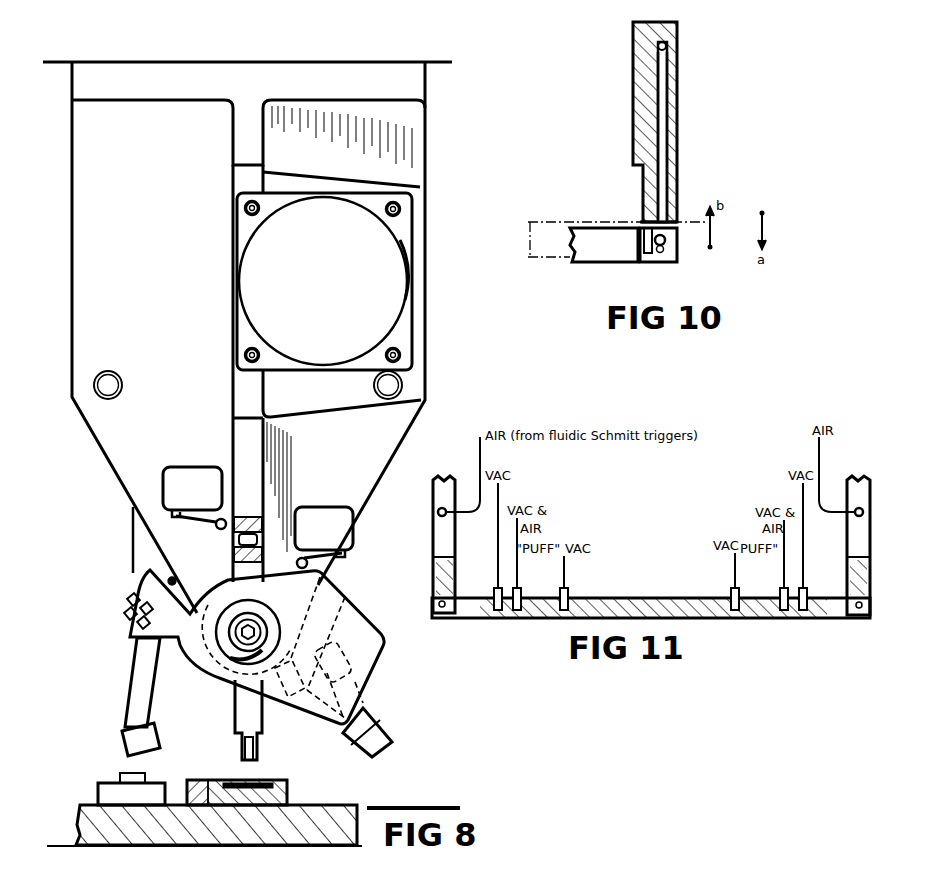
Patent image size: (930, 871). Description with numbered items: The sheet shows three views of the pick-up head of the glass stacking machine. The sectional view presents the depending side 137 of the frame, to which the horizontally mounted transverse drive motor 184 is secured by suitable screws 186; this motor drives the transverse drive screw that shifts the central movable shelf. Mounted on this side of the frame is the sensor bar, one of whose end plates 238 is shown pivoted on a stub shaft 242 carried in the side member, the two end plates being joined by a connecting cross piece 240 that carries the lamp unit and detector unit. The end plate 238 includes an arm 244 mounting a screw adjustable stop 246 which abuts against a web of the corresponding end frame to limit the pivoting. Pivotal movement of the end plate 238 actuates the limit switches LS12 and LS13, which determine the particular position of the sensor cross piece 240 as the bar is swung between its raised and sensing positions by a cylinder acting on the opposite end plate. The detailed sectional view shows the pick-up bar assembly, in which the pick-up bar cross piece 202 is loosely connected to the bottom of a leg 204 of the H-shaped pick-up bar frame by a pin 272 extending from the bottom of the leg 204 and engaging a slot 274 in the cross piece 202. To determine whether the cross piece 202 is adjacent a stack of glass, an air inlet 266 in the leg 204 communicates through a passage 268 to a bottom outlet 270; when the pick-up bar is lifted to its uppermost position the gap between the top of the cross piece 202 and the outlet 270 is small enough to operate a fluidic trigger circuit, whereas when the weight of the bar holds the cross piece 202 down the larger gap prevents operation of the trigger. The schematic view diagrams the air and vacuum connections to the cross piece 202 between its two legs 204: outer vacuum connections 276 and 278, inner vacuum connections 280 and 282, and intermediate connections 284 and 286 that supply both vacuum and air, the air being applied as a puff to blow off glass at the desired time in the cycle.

In FIG. 8, the side of frame 137 is at (192, 427).
In FIG. 8, the transverse drive motor 184 is at (301, 299).
In FIG. 8, the screws 186 is at (259, 349).
In FIG. 8, the limit switch LS12 is at (194, 498).
In FIG. 8, the limit switch LS13 is at (324, 537).
In FIG. 8, the end plate 238 is at (331, 593).
In FIG. 8, the cross piece 240 is at (340, 662).
In FIG. 8, the stub shafts 242 is at (262, 620).
In FIG. 8, the arm 244 is at (146, 580).
In FIG. 8, the screw adjustable stop 246 is at (178, 580).
In FIG. 10, the pick-up bar cross piece 202 is at (607, 263).
In FIG. 11, the pick-up bar cross piece 202 is at (652, 598).
In FIG. 10, the legs 204 is at (678, 153).
In FIG. 11, the legs 204 is at (433, 572).
In FIG. 10, the air inlet 266 is at (666, 44).
In FIG. 11, the air inlet 266 is at (438, 513).
In FIG. 10, the passage 268 is at (663, 110).
In FIG. 10, the bottom outlet 270 is at (666, 218).
In FIG. 10, the pin 272 is at (667, 243).
In FIG. 10, the slot 274 is at (662, 262).
In FIG. 11, the outer vacuum connection 276 is at (494, 594).
In FIG. 11, the outer vacuum connection 278 is at (807, 594).
In FIG. 11, the inner vacuum connection 280 is at (568, 594).
In FIG. 11, the inner vacuum connection 282 is at (731, 594).
In FIG. 11, the intermediate connection 284 is at (521, 594).
In FIG. 11, the intermediate connection 286 is at (780, 594).